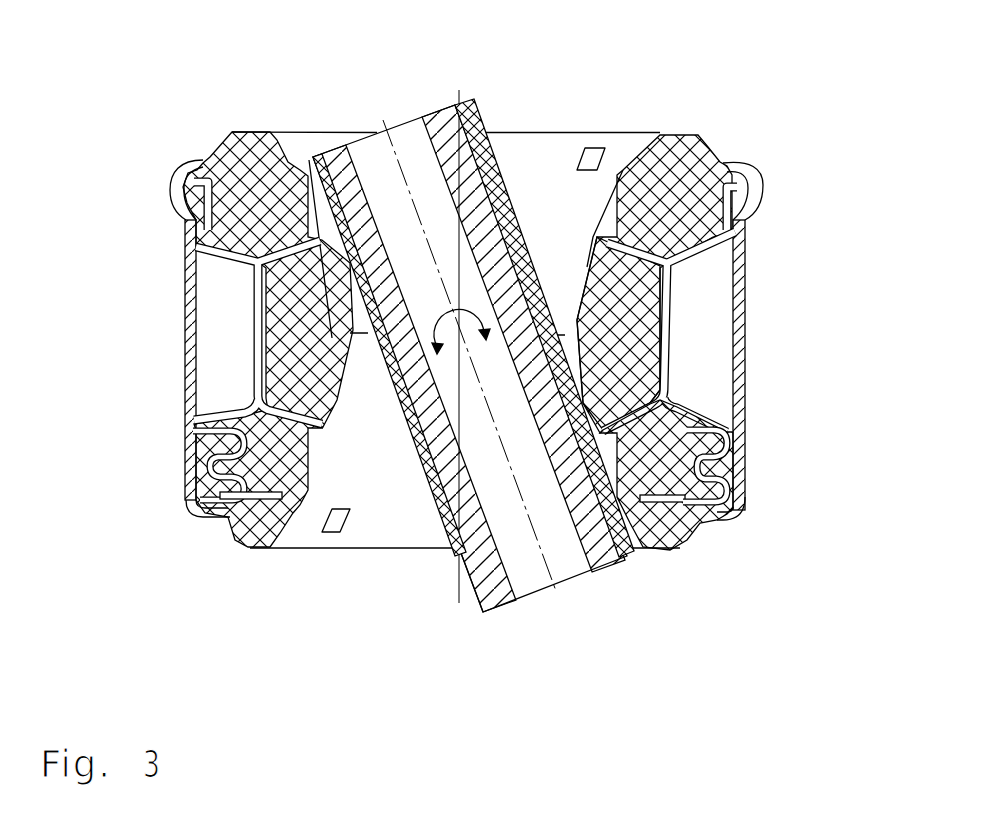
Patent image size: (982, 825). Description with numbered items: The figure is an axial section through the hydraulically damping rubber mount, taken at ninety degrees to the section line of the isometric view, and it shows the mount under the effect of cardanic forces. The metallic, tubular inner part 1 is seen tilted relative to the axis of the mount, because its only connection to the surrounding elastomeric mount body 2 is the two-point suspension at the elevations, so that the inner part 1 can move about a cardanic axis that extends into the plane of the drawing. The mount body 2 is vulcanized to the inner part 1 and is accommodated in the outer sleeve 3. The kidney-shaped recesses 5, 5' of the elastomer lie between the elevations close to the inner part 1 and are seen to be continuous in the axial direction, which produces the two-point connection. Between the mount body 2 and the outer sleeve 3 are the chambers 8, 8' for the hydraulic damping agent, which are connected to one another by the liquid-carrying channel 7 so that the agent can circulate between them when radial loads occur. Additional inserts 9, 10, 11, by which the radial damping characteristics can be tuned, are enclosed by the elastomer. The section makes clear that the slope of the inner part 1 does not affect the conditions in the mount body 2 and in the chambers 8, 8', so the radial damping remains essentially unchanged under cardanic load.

The inner part 1 is at (458, 54).
The mount body 2 is at (143, 53).
The outer sleeve 3 is at (800, 273).
The recess 5 is at (544, 287).
The recess 5' is at (375, 398).
The channel 7 is at (800, 489).
The chamber 8 is at (727, 332).
The chamber 8' is at (213, 337).
The insert 9 is at (800, 110).
The insert 10 is at (868, 193).
The insert 11 is at (865, 593).